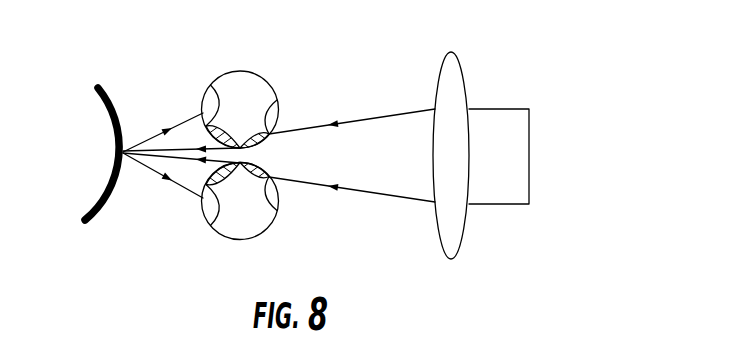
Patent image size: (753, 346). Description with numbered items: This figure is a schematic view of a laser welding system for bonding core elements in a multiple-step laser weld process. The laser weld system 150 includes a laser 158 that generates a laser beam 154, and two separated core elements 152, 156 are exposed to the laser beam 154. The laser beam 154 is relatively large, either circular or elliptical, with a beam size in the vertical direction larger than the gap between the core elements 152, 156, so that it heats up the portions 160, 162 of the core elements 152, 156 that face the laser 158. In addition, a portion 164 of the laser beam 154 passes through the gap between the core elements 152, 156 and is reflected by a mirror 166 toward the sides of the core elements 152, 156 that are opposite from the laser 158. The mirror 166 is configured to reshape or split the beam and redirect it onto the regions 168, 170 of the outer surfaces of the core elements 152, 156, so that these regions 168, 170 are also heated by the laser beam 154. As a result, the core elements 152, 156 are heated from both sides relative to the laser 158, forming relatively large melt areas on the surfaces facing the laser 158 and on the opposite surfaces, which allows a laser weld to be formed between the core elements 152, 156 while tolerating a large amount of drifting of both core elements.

The laser weld system 150 is at (541, 110).
The core element 152 is at (265, 217).
The laser beam 154 is at (368, 116).
The core element 156 is at (250, 100).
The laser 158 is at (513, 165).
The portion of core element 160 is at (273, 179).
The portion of core element 162 is at (277, 103).
The portion of laser beam 164 is at (174, 160).
The mirror 166 is at (93, 102).
The region of core element 168 is at (219, 215).
The region of core element 170 is at (217, 88).